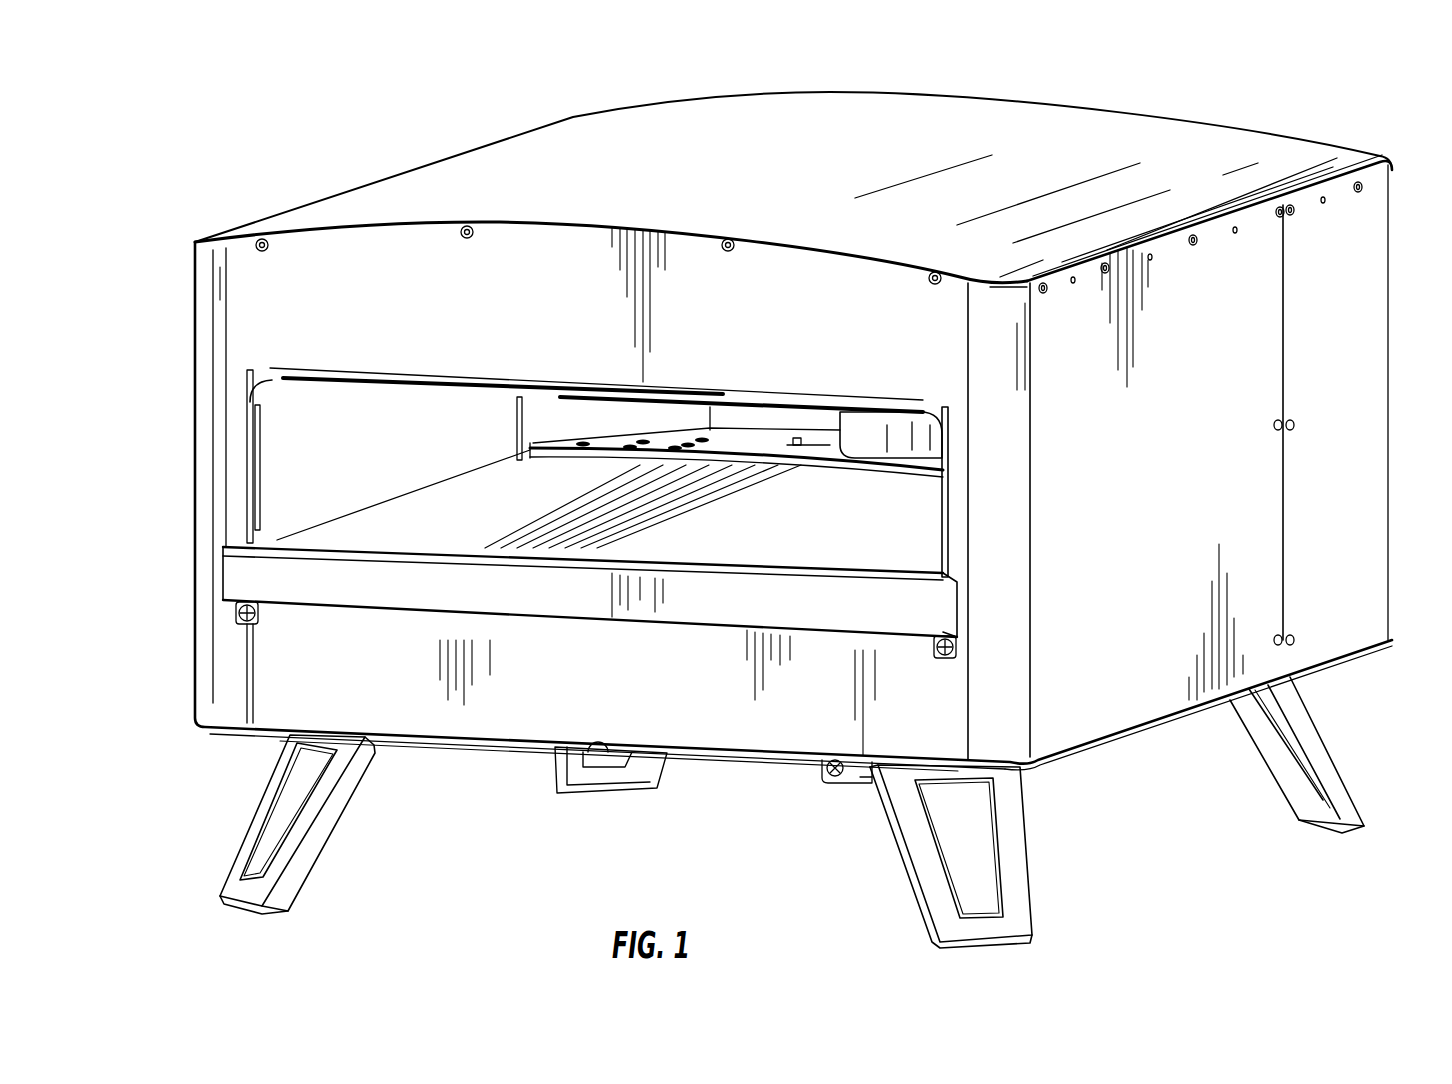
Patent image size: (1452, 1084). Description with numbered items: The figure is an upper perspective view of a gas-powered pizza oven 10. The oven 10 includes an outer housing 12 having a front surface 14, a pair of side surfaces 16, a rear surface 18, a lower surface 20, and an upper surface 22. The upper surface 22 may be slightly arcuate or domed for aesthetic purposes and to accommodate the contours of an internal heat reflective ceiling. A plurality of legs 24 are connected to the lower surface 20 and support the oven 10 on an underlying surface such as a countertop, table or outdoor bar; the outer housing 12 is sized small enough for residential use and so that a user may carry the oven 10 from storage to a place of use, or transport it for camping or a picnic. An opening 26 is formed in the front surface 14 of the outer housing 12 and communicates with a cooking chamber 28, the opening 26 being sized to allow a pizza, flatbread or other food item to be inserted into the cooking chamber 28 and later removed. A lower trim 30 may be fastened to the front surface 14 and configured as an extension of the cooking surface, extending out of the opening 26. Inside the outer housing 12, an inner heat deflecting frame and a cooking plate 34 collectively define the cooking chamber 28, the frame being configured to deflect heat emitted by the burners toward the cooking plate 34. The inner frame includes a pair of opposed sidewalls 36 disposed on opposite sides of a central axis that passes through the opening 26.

The oven 10 is at (428, 90).
The outer housing 12 is at (1195, 120).
The front surface 14 is at (713, 725).
The side surfaces 16 is at (1108, 698).
The rear surface 18 is at (1393, 368).
The lower surface 20 is at (768, 755).
The upper surface 22 is at (890, 113).
The legs 24 is at (232, 895).
The opening 26 is at (318, 444).
The cooking chamber 28 is at (698, 532).
The lower trim 30 is at (372, 590).
The cooking plate 34 is at (838, 534).
The sidewalls 36 is at (447, 442).